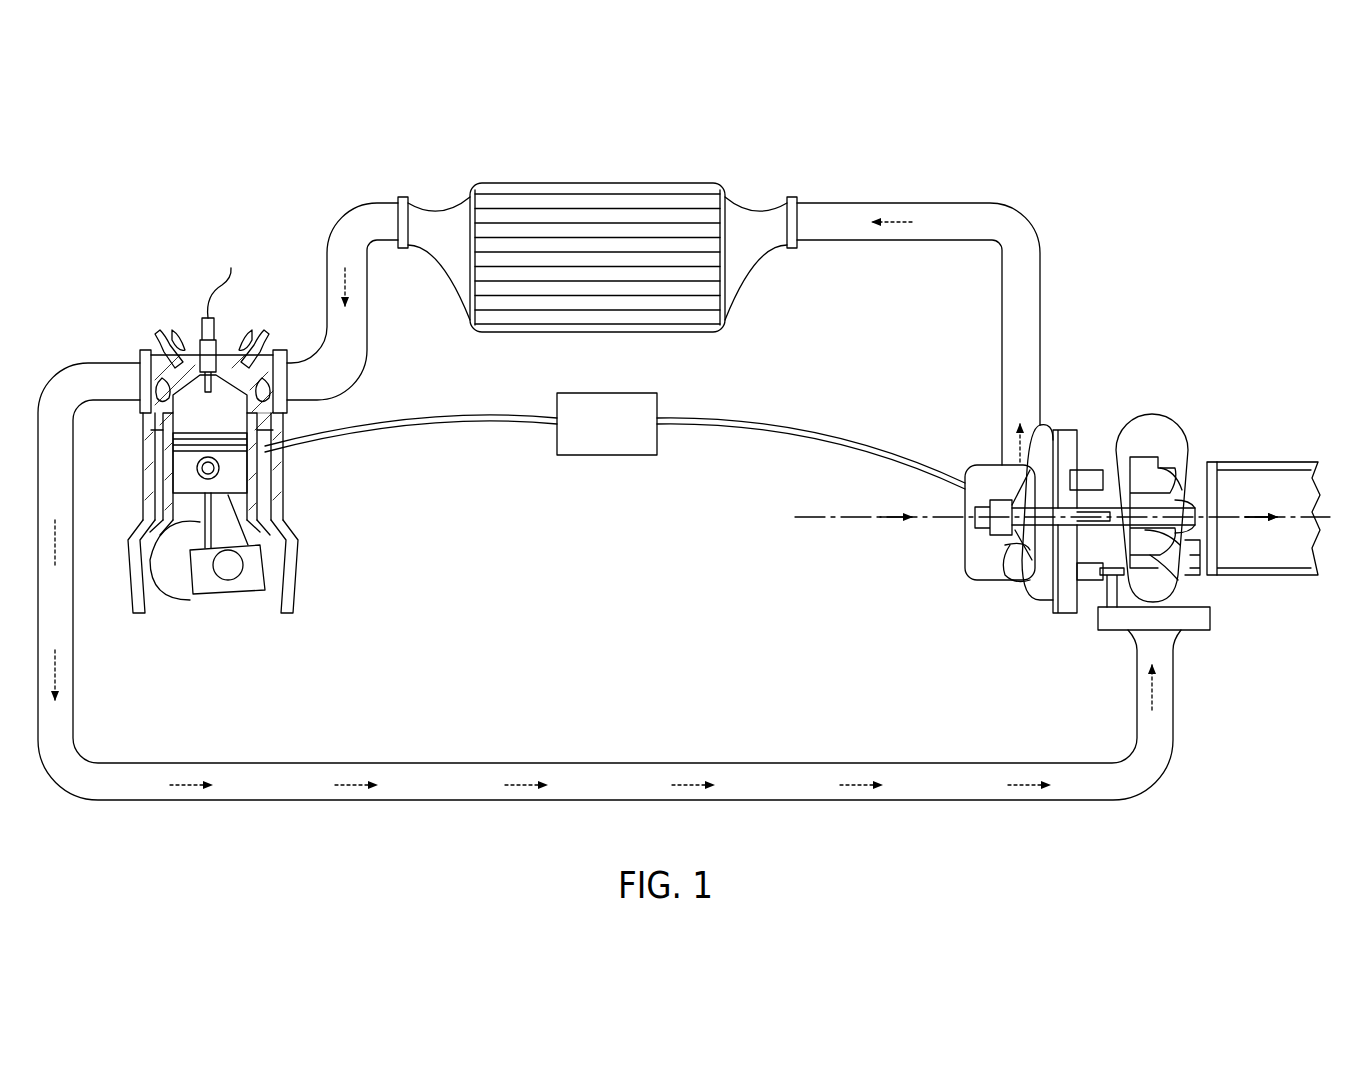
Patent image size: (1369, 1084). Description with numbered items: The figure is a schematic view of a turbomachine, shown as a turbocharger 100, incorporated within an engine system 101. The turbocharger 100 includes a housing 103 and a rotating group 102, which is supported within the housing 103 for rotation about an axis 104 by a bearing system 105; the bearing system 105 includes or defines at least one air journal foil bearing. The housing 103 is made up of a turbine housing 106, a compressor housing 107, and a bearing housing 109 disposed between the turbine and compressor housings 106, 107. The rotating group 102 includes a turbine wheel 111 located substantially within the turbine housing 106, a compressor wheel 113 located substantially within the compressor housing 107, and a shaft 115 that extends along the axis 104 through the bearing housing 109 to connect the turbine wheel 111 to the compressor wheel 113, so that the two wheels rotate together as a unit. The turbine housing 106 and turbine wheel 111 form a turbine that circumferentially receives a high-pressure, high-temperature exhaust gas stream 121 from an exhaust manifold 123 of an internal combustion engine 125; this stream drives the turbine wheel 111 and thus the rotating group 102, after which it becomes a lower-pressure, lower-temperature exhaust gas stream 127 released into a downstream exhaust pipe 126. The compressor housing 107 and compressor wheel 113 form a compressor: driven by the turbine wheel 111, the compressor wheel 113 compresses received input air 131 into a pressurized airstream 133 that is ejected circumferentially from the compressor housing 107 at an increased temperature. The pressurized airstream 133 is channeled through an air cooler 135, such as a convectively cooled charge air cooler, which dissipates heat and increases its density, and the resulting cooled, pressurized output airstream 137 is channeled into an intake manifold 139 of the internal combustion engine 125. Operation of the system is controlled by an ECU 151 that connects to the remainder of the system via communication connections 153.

The turbocharger 100 is at (1158, 340).
The engine system 101 is at (183, 185).
The rotating group 102 is at (1062, 530).
The housing 103 is at (1058, 425).
The axis 104 is at (1323, 520).
The bearing system 105 is at (1092, 535).
The turbine housing 106 is at (1178, 440).
The compressor housing 107 is at (997, 588).
The bearing housing 109 is at (1073, 472).
The turbine wheel 111 is at (1168, 505).
The compressor wheel 113 is at (980, 573).
The shaft 115 is at (1115, 500).
The exhaust gas stream 121 is at (688, 785).
The exhaust manifold 123 is at (165, 358).
The internal combustion engine 125 is at (236, 481).
The downstream exhaust pipe 126 is at (1270, 460).
The exhaust gas stream 127 is at (1253, 520).
The input air 131 is at (873, 520).
The pressurized airstream 133 is at (1003, 442).
The air cooler 135 is at (597, 207).
The output airstream 137 is at (345, 293).
The intake manifold 139 is at (270, 400).
The ECU 151 is at (597, 456).
The communication connections 153 is at (743, 437).